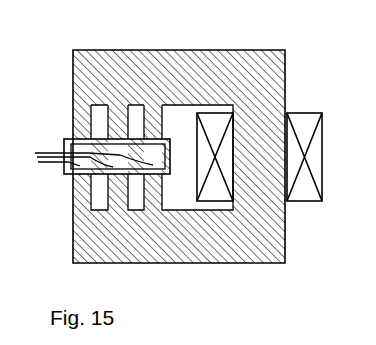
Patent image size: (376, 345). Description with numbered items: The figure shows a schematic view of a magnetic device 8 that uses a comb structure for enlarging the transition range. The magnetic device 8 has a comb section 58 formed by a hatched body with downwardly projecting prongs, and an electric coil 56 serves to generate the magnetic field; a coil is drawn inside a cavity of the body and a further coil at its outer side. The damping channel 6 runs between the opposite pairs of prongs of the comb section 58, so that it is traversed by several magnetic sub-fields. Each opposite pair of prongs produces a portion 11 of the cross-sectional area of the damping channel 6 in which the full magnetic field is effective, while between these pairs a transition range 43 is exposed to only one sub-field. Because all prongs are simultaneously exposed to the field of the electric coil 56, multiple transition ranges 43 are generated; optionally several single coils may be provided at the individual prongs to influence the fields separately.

The magnetic device 8 is at (77, 49).
The transition range 43 is at (133, 147).
The comb section 58 is at (66, 112).
The damping channel 6 is at (72, 140).
The portion of the cross-sectional area 11 is at (82, 159).
The electric coil 56 is at (303, 117).